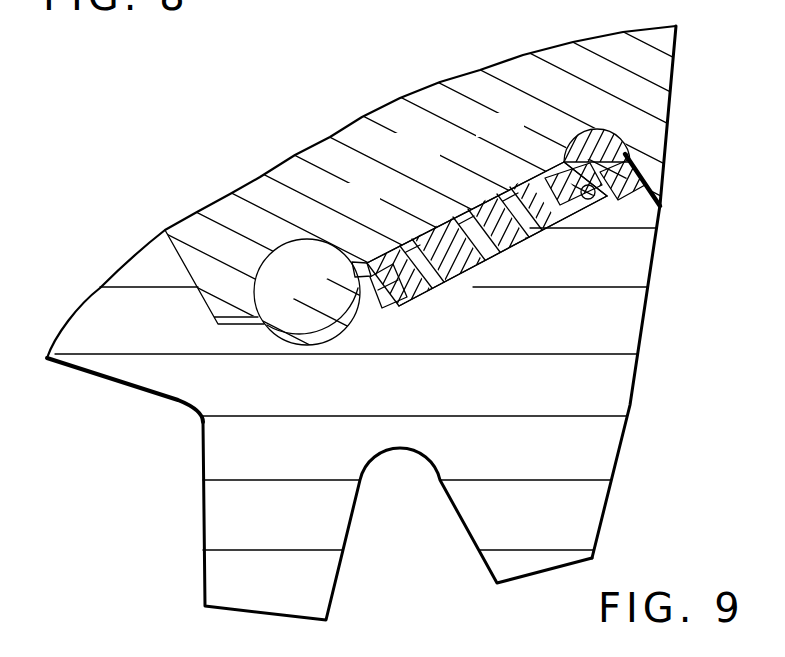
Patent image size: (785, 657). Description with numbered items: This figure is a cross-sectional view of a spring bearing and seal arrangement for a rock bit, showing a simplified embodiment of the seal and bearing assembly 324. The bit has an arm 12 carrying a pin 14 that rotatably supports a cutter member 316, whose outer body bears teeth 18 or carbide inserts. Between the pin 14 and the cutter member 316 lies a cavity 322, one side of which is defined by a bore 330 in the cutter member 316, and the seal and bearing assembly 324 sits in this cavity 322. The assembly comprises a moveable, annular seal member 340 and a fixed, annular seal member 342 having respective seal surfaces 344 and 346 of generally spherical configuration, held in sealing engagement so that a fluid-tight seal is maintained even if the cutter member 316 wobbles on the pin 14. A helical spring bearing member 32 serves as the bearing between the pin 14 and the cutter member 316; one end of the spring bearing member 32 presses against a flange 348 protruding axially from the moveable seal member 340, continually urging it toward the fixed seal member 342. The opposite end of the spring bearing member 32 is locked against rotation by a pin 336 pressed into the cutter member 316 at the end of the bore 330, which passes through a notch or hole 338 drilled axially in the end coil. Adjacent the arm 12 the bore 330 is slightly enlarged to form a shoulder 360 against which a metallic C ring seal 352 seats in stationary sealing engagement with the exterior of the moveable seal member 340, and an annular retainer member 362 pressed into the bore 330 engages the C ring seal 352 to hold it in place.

The arm 12 is at (642, 65).
The pin 14 is at (220, 203).
The teeth 18 is at (220, 537).
The helical spring bearing member 32 is at (423, 232).
The cutter member 316 is at (97, 312).
The cavity 322 is at (460, 213).
The seal and bearing assembly 324 is at (470, 188).
The bore 330 is at (455, 262).
The pin 336 is at (374, 292).
The notch or hole 338 is at (395, 307).
The moveable annular seal member 340 is at (567, 208).
The fixed annular seal member 342 is at (588, 135).
The seal surface 344 is at (628, 153).
The seal surface 346 is at (553, 150).
The flange 348 is at (535, 168).
The "C" ring seal 352 is at (600, 205).
The shoulder 360 is at (593, 200).
The annular retainer member 362 is at (633, 175).